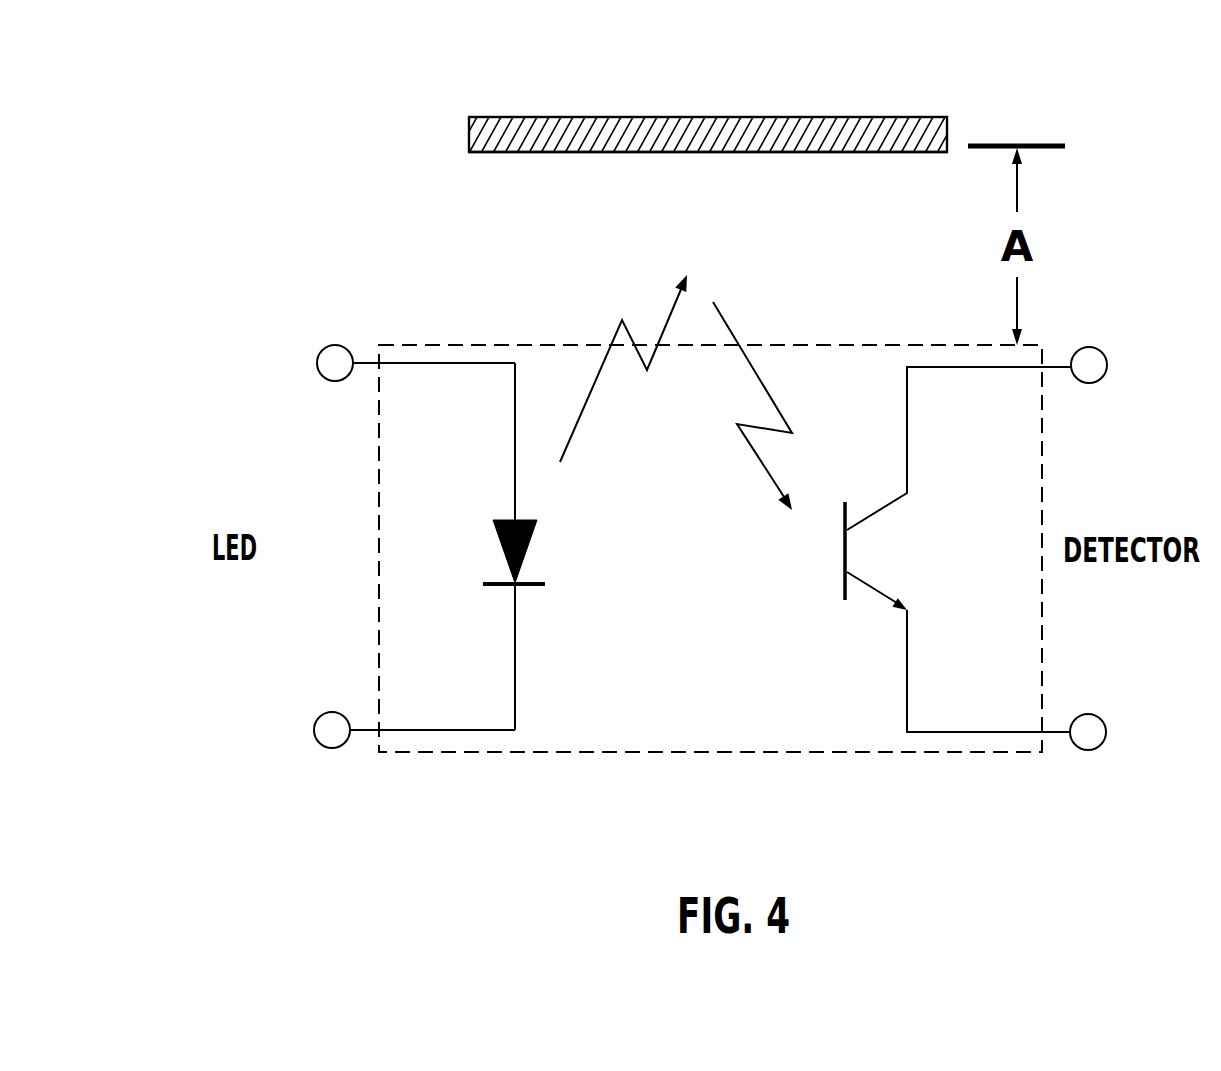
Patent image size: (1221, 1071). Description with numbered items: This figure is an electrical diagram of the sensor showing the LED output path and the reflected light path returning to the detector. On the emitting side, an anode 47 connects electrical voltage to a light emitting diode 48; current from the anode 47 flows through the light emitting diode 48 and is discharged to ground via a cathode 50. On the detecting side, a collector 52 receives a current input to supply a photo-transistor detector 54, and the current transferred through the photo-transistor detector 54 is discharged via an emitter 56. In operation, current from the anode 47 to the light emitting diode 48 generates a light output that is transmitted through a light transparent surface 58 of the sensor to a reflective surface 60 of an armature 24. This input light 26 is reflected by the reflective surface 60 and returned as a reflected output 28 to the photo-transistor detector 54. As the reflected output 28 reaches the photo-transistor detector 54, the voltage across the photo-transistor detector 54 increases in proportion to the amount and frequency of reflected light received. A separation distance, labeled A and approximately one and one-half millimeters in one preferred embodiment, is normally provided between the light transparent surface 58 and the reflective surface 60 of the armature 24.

The armature 24 is at (641, 117).
The reflective surface 60 is at (559, 158).
The light transparent surface 58 is at (462, 334).
The input light 26 is at (612, 331).
The reflected output 28 is at (732, 330).
The anode 47 is at (317, 360).
The cathode 50 is at (330, 748).
The light emitting diode 48 is at (502, 545).
The photo-transistor detector 54 is at (848, 548).
The collector 52 is at (1107, 365).
The emitter 56 is at (1106, 732).